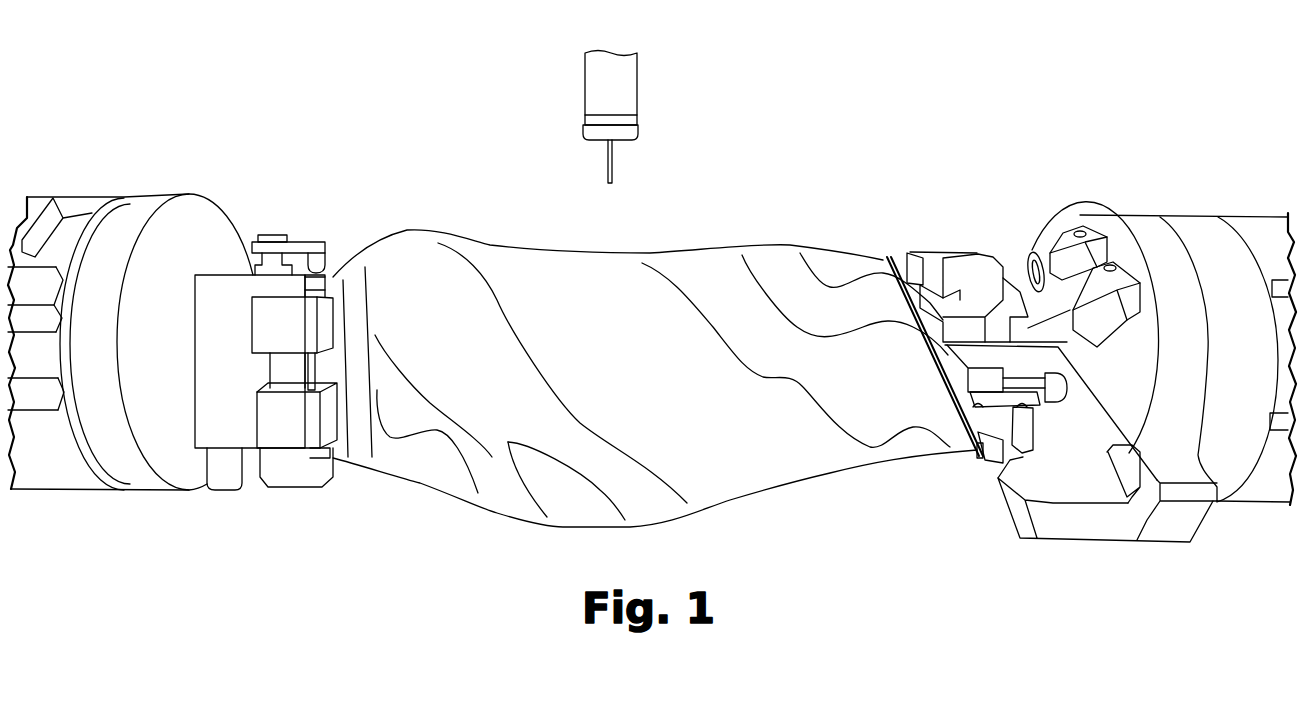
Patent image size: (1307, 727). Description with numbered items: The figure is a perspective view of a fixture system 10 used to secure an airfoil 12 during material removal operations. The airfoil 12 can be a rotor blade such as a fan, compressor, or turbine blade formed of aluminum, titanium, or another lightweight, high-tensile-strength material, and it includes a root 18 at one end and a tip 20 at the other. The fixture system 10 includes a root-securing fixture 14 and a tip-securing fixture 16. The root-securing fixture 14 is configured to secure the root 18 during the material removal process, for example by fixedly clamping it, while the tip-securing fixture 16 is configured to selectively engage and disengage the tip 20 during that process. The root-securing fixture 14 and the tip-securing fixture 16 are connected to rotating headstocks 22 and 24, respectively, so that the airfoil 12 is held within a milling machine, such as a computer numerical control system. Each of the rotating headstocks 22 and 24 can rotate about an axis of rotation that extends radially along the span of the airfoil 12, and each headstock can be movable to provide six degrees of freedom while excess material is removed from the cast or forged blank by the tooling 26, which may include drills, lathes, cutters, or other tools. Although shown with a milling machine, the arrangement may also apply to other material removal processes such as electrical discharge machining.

The fixture system 10 is at (652, 297).
The airfoil 12 is at (492, 249).
The root-securing fixture 14 is at (246, 202).
The tip-securing fixture 16 is at (997, 227).
The root 18 is at (318, 288).
The tip 20 is at (892, 264).
The rotating headstock 22 is at (68, 222).
The rotating headstock 24 is at (1267, 222).
The tooling 26 is at (628, 90).